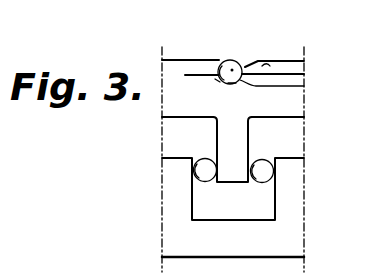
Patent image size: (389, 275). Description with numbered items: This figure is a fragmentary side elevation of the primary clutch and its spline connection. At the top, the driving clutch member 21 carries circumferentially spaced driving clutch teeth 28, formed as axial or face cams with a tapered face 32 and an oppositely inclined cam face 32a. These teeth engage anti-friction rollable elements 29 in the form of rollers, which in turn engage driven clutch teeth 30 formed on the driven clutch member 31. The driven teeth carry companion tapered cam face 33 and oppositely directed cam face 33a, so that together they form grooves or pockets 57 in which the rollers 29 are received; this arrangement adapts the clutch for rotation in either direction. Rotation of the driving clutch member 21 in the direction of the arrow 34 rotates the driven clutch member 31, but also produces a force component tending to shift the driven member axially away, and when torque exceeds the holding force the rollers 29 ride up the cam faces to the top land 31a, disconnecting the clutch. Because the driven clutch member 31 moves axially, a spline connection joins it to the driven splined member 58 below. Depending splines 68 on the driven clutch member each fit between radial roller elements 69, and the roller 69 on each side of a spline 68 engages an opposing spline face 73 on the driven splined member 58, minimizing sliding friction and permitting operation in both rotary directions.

The driving clutch member 21 is at (179, 52).
The driving clutch teeth 28 is at (247, 67).
The anti-friction rollable elements 29 is at (225, 61).
The driven clutch teeth 30 is at (217, 81).
The driven clutch member 31 is at (288, 107).
The top land 31a is at (185, 75).
The tapered faces 32 is at (256, 61).
The oppositely inclined cam face 32a is at (270, 67).
The tapered cam faces 33 is at (217, 77).
The oppositely directed cam face 33a is at (304, 87).
The arrow 34 is at (240, 22).
The grooves or pockets 57 is at (232, 85).
The driven splined member 58 is at (183, 240).
The splines 68 is at (236, 148).
The radial roller elements 69 is at (204, 164).
The spline face 73 is at (195, 198).